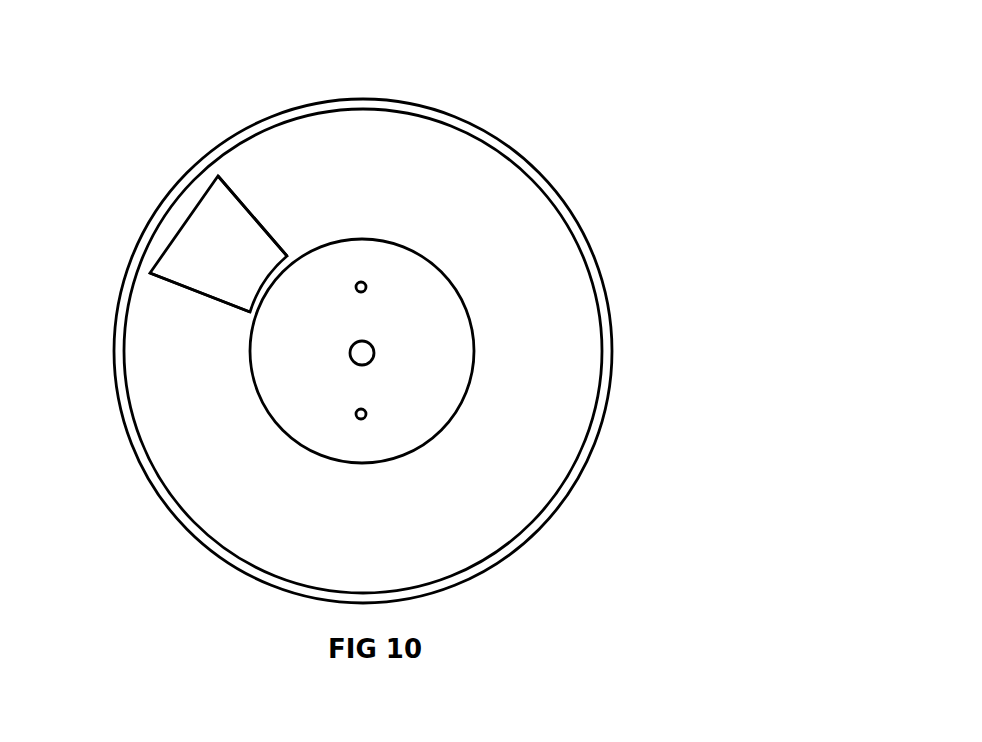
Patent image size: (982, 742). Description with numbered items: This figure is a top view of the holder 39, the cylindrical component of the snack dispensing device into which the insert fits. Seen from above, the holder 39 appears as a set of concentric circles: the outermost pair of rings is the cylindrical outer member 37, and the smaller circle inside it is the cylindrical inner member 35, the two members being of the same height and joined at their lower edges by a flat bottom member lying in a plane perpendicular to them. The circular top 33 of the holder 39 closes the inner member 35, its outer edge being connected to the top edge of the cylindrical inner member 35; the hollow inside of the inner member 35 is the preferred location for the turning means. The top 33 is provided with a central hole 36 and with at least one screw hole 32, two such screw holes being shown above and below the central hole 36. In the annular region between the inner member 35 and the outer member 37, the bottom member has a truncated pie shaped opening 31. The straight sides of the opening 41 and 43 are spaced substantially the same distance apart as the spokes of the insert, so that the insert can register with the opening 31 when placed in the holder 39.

The truncated pie shaped opening 31 is at (224, 253).
The screw hole 32 is at (353, 417).
The top 33 is at (438, 383).
The cylindrical inner member 35 is at (413, 247).
The central hole 36 is at (346, 357).
The cylindrical outer member 37 is at (556, 205).
The holder 39 is at (613, 310).
The straight side of the opening 41 is at (248, 202).
The straight side of the opening 43 is at (203, 299).